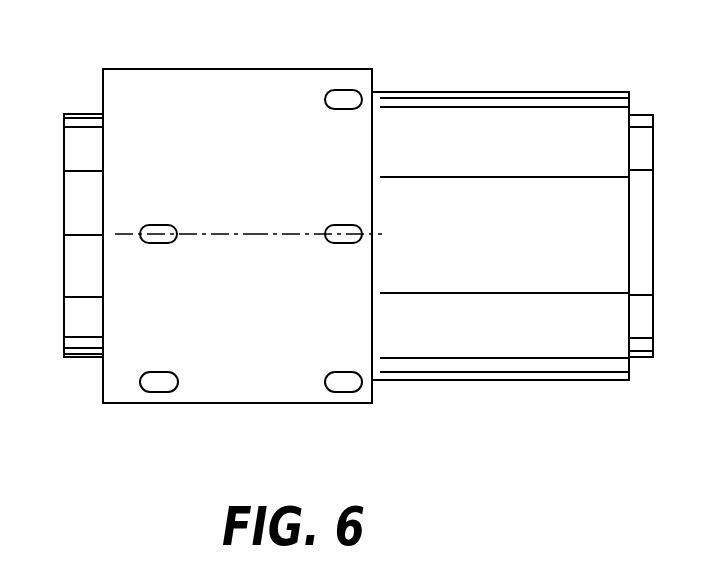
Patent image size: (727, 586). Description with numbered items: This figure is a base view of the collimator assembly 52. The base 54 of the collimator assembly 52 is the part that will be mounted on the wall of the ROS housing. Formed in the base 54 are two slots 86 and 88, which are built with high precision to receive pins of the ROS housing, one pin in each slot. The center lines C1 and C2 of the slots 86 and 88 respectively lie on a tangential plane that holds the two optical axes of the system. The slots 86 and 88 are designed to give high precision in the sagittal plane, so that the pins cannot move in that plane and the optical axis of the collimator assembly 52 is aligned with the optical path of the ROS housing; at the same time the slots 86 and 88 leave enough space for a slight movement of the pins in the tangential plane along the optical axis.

The collimator assembly 52 is at (104, 48).
The base 54 is at (263, 404).
The slot 86 is at (157, 224).
The slot 88 is at (335, 245).
The center line C1 is at (127, 236).
The center line C2 is at (380, 238).